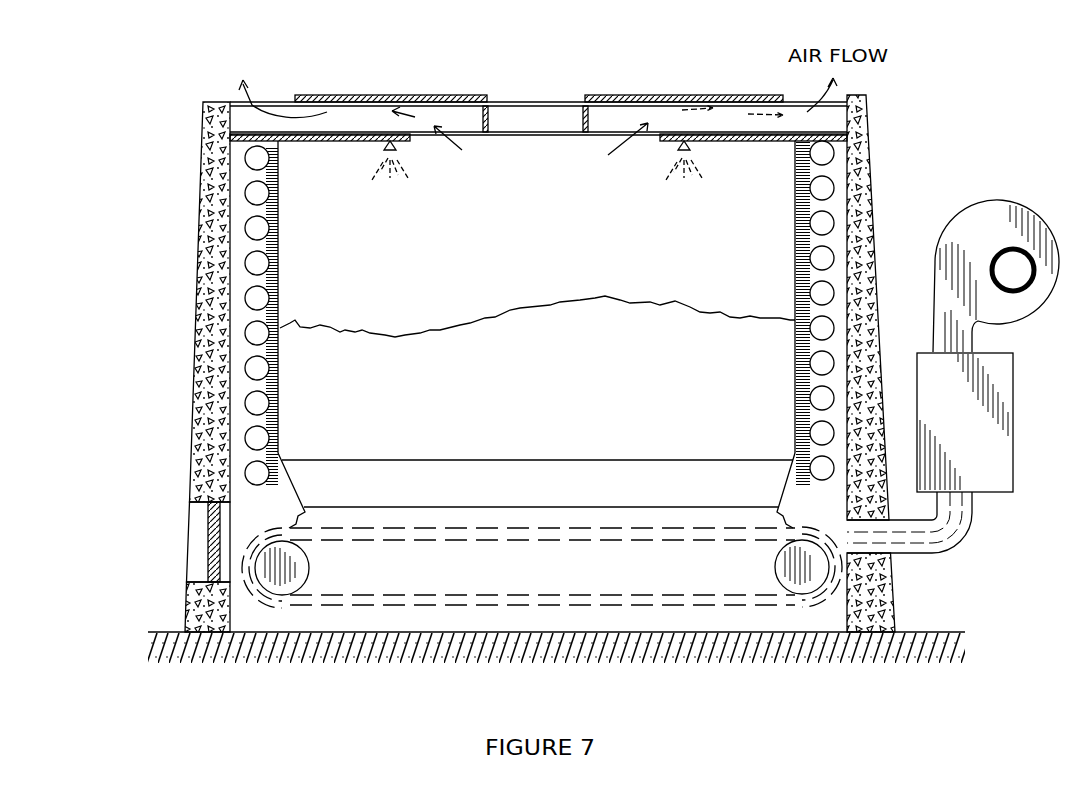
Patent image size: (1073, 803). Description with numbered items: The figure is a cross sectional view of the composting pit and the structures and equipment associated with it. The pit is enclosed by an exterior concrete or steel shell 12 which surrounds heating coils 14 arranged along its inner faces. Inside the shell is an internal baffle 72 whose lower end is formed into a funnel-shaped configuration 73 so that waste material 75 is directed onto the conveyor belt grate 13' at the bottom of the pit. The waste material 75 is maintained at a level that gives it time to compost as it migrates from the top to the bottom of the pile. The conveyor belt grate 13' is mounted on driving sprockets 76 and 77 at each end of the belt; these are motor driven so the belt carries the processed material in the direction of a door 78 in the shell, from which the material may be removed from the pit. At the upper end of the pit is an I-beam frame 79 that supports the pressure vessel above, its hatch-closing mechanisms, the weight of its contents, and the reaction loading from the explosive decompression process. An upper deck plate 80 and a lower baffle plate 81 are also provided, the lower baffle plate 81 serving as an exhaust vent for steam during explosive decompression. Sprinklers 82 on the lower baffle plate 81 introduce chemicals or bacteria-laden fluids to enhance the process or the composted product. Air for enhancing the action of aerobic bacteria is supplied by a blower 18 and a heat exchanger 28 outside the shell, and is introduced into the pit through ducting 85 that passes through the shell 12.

The exterior concrete or steel shell 12 is at (872, 160).
The heating coils 14 is at (823, 187).
The blower 18 is at (1028, 218).
The heat exchanger 28 is at (1015, 383).
The internal baffle 72 is at (792, 202).
The funnel-shaped configuration 73 is at (296, 494).
The waste material 75 is at (507, 309).
The driving sprocket 76 is at (823, 567).
The driving sprocket 77 is at (300, 568).
The door 78 is at (212, 568).
The I-beam frame 79 is at (521, 135).
The upper deck plate 80 is at (583, 93).
The lower baffle plate 81 is at (318, 142).
The sprinklers 82 is at (397, 149).
The ducting 85 is at (975, 527).
The conveyor belt grate 13' is at (542, 566).